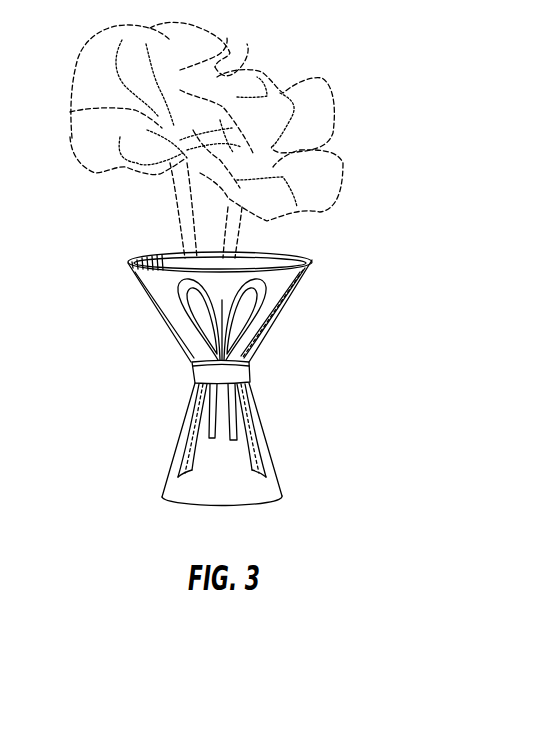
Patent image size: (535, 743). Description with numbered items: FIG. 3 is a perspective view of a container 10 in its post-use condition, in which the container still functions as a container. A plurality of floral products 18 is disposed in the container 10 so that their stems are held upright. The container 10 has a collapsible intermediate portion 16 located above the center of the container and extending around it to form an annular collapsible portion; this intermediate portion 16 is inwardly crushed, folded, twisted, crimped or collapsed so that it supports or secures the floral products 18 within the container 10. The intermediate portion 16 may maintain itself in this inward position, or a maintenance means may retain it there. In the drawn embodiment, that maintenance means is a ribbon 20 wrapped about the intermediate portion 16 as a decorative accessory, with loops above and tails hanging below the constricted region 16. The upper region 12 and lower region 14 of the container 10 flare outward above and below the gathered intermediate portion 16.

The container 10 is at (358, 221).
The upper cone portion 12 is at (163, 300).
The lower cone portion 14 is at (192, 453).
The intermediate portion 16 is at (193, 367).
The floral products 18 is at (308, 82).
The ribbon 20 is at (254, 318).